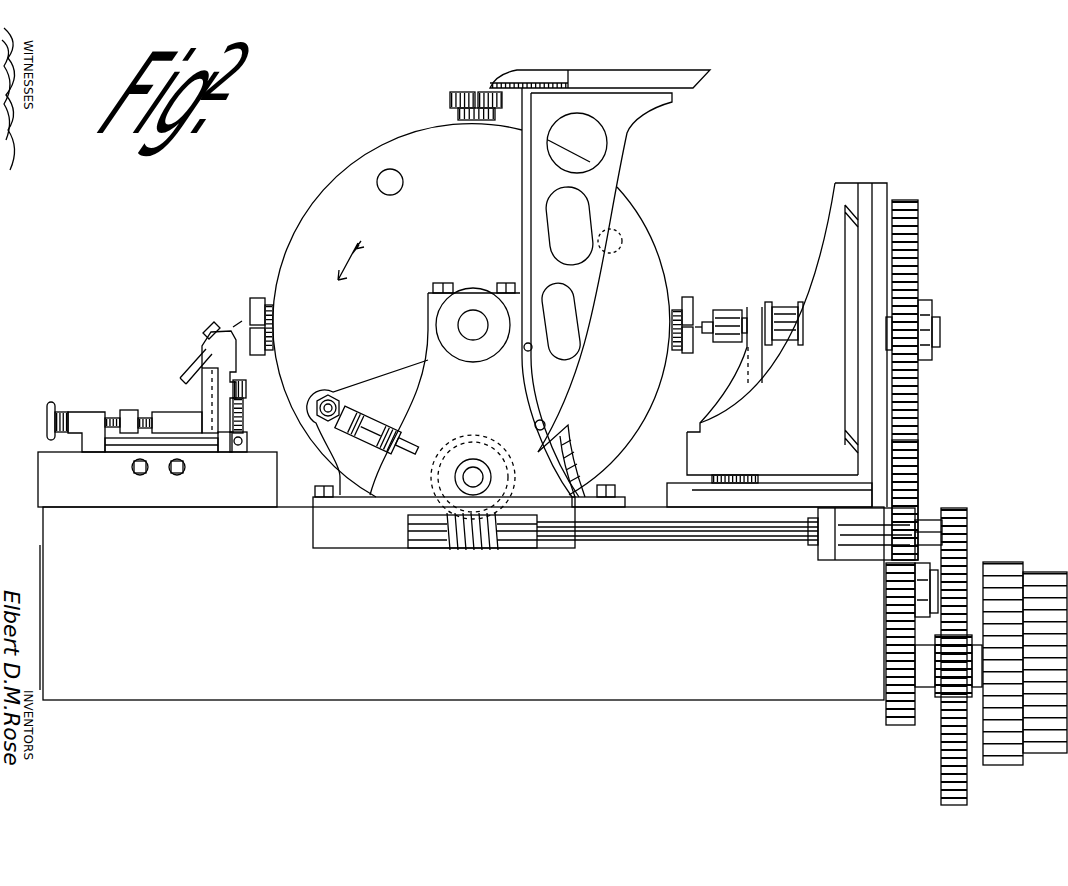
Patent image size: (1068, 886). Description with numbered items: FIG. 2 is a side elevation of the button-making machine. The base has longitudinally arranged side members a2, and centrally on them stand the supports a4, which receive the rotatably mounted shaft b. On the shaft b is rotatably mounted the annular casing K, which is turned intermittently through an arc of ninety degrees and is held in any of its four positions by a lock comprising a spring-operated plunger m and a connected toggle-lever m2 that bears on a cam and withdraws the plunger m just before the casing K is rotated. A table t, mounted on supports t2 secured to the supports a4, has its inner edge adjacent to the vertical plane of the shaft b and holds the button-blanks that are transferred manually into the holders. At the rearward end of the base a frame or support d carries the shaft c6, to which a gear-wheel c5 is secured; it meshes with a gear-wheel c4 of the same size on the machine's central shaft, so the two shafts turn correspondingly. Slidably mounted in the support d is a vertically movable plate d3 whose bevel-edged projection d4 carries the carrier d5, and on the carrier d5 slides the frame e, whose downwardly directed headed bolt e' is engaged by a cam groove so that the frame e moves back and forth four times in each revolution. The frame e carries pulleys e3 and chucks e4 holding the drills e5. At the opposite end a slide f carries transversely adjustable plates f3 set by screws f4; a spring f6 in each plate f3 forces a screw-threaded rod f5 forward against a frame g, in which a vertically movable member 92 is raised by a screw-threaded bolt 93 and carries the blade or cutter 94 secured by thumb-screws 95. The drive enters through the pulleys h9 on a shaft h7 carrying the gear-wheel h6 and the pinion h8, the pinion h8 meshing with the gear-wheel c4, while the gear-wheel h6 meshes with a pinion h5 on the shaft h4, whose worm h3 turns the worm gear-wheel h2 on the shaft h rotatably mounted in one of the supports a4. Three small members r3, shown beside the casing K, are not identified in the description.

The annular casing K is at (322, 193).
The table t is at (626, 82).
The supports t2 is at (614, 158).
The rollers r3 is at (450, 100).
The side members a2 is at (462, 603).
The supports a4 is at (441, 415).
The shaft b is at (471, 326).
The spring-operated plunger m is at (327, 403).
The toggle-lever m2 is at (357, 415).
The shaft h is at (470, 478).
The worm gear-wheel h2 is at (497, 495).
The worm h3 is at (475, 550).
The shaft h4 is at (667, 543).
The pinion h5 is at (968, 526).
The gear-wheel h6 is at (941, 787).
The shaft h7 is at (927, 698).
The pinion h8 is at (888, 714).
The pulleys h9 is at (1038, 762).
The gear-wheel c4 is at (918, 495).
The gear-wheel c5 is at (918, 408).
The shaft c6 is at (941, 338).
The frame or support d is at (885, 200).
The vertically-movable plate d3 is at (865, 190).
The bevel-edged projection d4 is at (850, 366).
The carrier d5 is at (772, 450).
The headed bolt e' is at (769, 493).
The frame e is at (730, 365).
The pulley e3 is at (789, 300).
The chucks e4 is at (732, 304).
The drill e5 is at (723, 365).
The slide f is at (157, 479).
The plates f3 is at (100, 440).
The screws f4 is at (174, 473).
The screw-threaded rod f5 is at (113, 416).
The spring f6 is at (72, 400).
The frame g is at (200, 416).
The vertically-movable member 92 is at (246, 392).
The screw-threaded bolt 93 is at (246, 422).
The blade or cutter 94 is at (203, 359).
The thumb-screws 95 is at (205, 331).